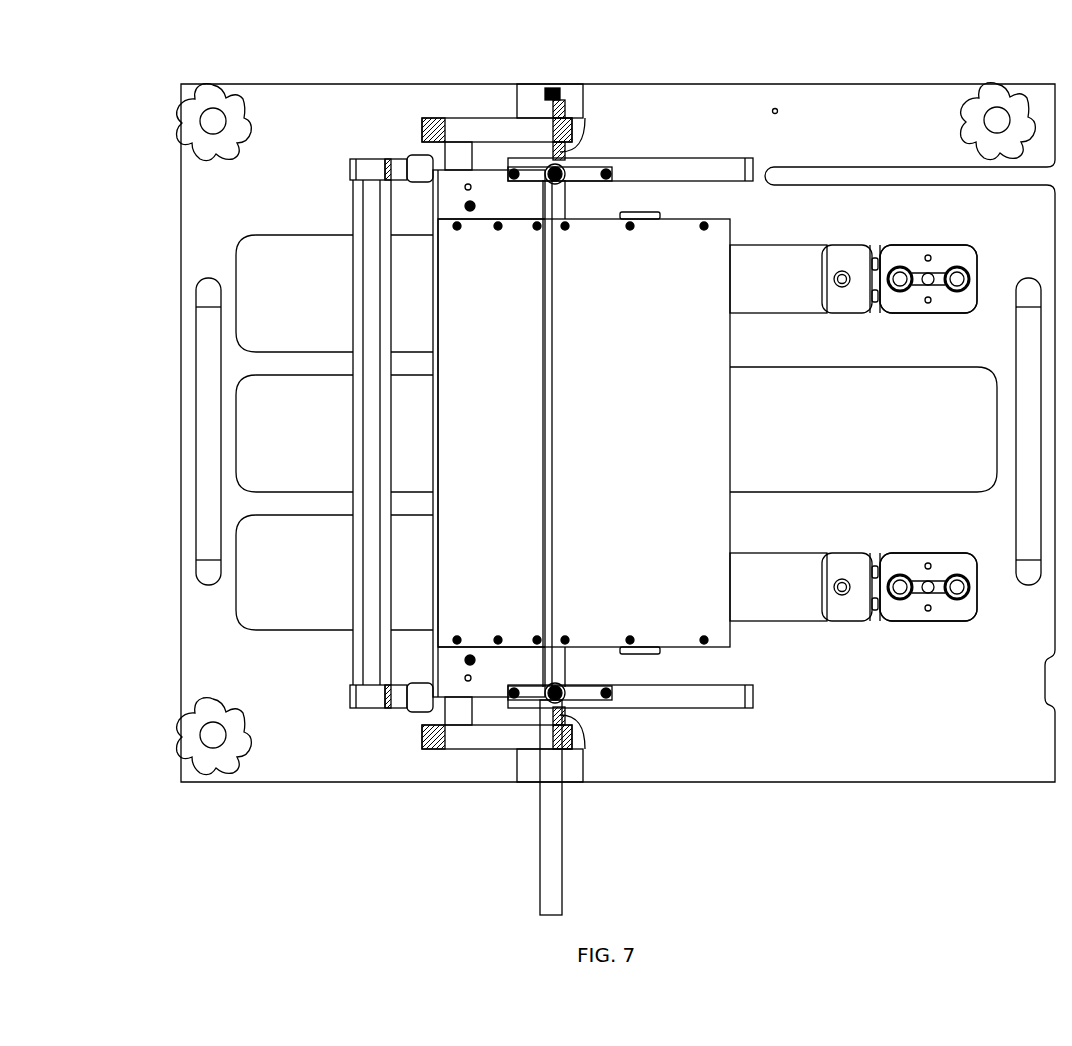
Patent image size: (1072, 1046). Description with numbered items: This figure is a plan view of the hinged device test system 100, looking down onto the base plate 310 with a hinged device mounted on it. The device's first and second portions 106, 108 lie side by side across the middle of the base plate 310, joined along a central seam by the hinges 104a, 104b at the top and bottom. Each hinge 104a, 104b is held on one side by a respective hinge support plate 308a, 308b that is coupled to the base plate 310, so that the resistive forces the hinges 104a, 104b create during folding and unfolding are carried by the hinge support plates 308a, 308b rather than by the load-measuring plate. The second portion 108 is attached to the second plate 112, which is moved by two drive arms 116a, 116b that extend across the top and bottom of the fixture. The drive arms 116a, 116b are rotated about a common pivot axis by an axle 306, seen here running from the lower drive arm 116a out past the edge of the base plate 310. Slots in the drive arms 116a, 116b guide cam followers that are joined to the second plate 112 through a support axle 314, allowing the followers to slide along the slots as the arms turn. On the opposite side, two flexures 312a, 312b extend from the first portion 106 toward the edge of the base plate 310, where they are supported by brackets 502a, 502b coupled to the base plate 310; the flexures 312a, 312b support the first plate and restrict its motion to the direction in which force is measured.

The hinged device test system 100 is at (75, 88).
The base plate 310 is at (293, 100).
The drive arm 116b is at (490, 115).
The drive arm 116a is at (510, 738).
The second plate 112 is at (450, 185).
The support axle 314 is at (441, 708).
The hinge 104b is at (575, 170).
The hinge 104a is at (575, 697).
The hinge support plate 308b is at (680, 158).
The hinge support plate 308a is at (730, 708).
The flexure 312b is at (790, 238).
The flexure 312a is at (790, 546).
The bracket 502b is at (907, 252).
The bracket 502a is at (908, 560).
The second portion of hinged device 108 is at (483, 290).
The first portion of hinged device 106 is at (720, 342).
The axle 306 is at (542, 866).